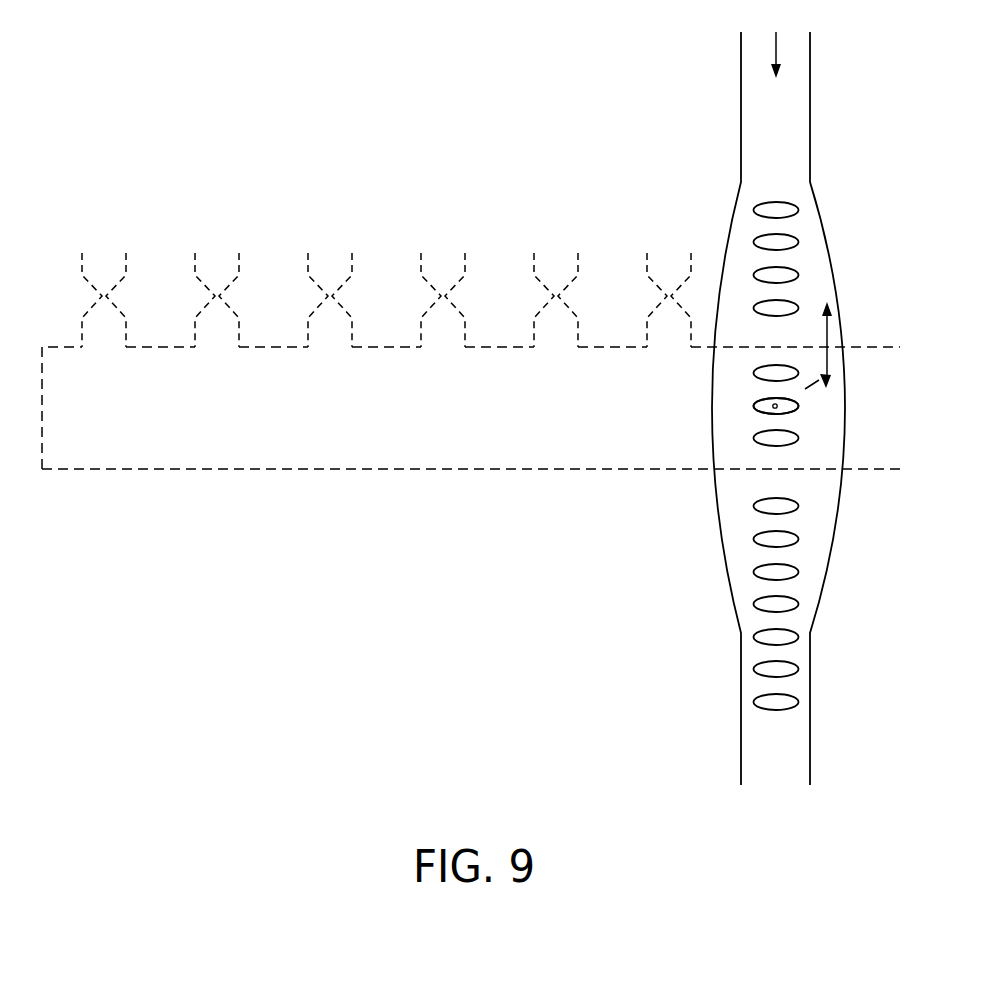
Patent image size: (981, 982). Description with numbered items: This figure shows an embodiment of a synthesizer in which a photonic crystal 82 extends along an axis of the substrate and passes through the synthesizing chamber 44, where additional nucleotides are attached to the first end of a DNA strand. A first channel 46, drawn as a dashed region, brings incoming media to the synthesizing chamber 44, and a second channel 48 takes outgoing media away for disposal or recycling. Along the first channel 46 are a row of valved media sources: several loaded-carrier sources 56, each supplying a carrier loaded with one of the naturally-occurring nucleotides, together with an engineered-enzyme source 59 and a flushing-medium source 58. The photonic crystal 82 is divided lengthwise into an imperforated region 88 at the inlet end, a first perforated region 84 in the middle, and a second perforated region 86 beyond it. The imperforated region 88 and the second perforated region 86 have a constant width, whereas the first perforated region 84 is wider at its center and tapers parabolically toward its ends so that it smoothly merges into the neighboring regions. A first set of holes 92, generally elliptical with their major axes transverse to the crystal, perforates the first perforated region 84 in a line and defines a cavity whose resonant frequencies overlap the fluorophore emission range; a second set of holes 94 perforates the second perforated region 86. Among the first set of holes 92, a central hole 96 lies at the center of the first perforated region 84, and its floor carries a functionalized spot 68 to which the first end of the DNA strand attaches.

The synthesizing chamber 44 is at (804, 406).
The first channel 46 is at (225, 422).
The second channel 48 is at (890, 455).
The loaded-carrier source 56 is at (118, 342).
The flushing-medium source 58 is at (683, 342).
The engineered-enzyme source 59 is at (570, 342).
The functionalized spot 68 is at (771, 406).
The photonic crystal 82 is at (737, 212).
The first perforated region 84 is at (745, 393).
The second perforated region 86 is at (756, 565).
The imperforated region 88 is at (788, 140).
The first set of holes 92 is at (799, 275).
The second set of holes 94 is at (762, 578).
The central hole 96 is at (768, 411).